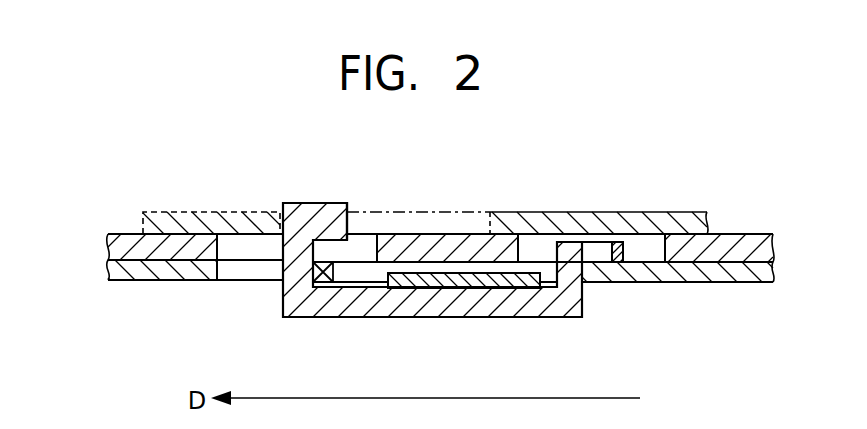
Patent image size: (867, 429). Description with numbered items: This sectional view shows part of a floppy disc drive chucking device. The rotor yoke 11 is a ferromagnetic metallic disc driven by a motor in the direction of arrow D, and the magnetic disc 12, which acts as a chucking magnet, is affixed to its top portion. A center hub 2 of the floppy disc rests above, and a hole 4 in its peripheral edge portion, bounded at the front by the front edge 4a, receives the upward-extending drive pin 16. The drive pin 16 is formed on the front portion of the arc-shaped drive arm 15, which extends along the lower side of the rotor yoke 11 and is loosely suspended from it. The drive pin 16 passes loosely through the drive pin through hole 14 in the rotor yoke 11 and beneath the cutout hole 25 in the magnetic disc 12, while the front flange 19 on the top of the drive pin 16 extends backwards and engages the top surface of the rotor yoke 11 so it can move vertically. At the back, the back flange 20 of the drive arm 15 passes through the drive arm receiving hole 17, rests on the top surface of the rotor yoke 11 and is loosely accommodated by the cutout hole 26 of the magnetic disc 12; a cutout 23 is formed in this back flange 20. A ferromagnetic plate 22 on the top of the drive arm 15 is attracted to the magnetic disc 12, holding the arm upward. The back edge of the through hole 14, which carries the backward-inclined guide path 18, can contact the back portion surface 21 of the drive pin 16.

The center hub 2 is at (179, 212).
The hole 4 is at (437, 212).
The front edge 4a is at (265, 212).
The rotor yoke 11 is at (155, 272).
The magnetic disc 12 is at (115, 248).
The drive pin through hole 14 is at (240, 270).
The drive arm 15 is at (427, 298).
The drive pin 16 is at (293, 284).
The drive arm receiving hole 17 is at (362, 268).
The guide path 18 is at (322, 263).
The front flange 19 is at (330, 208).
The back flange 20 is at (618, 250).
The back portion surface 21 is at (317, 273).
The ferromagnetic plate 22 is at (503, 281).
The cutout 23 is at (600, 252).
The cutout hole 25 is at (238, 248).
The cutout hole 26 is at (642, 247).